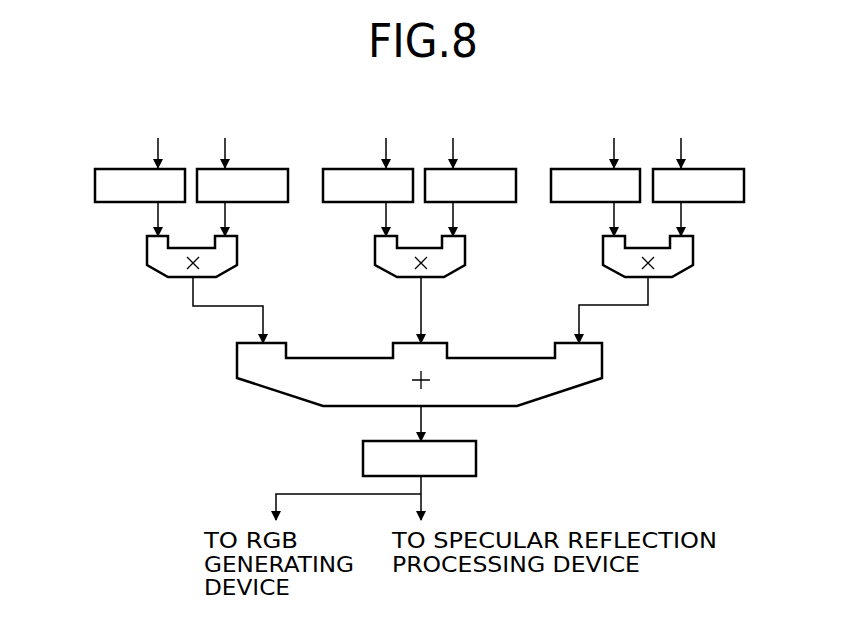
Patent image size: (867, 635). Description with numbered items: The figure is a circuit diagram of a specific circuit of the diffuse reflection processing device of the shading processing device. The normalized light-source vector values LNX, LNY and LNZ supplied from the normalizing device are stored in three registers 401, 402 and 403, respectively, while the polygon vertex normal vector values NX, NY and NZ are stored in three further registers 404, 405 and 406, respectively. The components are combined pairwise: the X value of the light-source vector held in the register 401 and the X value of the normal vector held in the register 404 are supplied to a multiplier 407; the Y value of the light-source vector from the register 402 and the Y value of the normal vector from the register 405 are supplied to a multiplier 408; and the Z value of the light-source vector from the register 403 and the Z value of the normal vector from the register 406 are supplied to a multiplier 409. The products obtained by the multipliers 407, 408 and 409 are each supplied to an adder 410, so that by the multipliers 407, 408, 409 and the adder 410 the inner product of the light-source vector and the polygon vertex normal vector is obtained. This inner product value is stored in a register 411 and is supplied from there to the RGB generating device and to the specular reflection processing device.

The register 401 is at (108, 168).
The register 402 is at (341, 168).
The register 403 is at (568, 168).
The register 404 is at (262, 168).
The register 405 is at (491, 168).
The register 406 is at (719, 168).
The multiplier 407 is at (237, 252).
The multiplier 408 is at (465, 252).
The multiplier 409 is at (693, 252).
The adder 410 is at (602, 360).
The register 411 is at (476, 458).